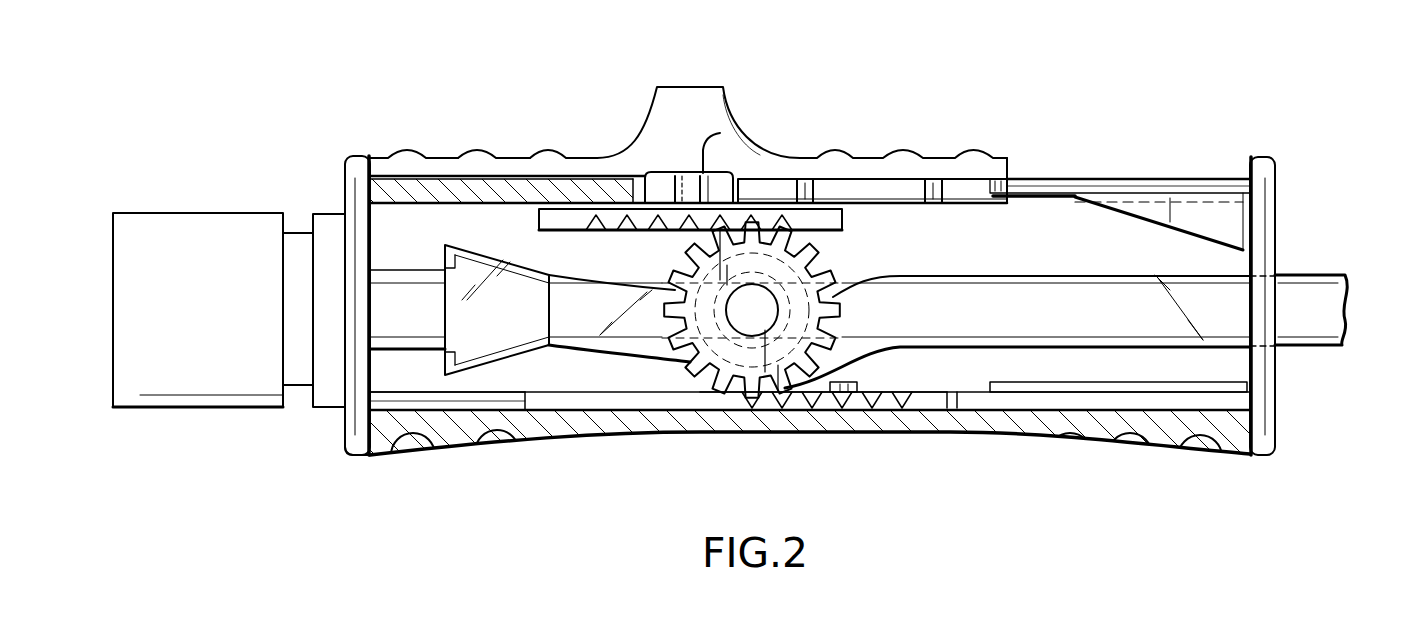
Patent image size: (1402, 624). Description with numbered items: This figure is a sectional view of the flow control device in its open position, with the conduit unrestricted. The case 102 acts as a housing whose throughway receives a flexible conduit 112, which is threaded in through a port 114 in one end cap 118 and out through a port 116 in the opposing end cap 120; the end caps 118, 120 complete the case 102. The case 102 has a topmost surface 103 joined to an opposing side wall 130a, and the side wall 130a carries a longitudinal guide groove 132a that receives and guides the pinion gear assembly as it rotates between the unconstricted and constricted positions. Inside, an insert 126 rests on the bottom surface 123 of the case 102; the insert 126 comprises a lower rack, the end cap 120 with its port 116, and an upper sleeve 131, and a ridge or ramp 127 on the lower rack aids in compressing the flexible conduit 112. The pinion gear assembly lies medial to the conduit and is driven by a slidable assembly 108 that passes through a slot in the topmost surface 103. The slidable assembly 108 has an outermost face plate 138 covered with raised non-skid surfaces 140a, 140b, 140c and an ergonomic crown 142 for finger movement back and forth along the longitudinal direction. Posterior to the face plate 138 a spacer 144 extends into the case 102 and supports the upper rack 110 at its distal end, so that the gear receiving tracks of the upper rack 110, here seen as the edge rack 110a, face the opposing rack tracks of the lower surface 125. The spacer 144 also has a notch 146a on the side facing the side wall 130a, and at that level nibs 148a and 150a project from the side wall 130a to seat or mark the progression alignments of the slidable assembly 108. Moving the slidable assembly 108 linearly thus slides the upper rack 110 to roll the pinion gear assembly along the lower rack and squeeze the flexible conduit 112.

The case 102 is at (837, 422).
The topmost surface 103 is at (1078, 178).
The slidable assembly 108 is at (673, 97).
The upper rack 110 is at (734, 240).
The upper rack 110a is at (596, 232).
The flexible conduit 112 is at (1310, 275).
The port 114 is at (95, 300).
The port 116 is at (1366, 316).
The end cap 118 is at (353, 455).
The end cap 120 is at (1275, 450).
The bottom surface 123 is at (463, 403).
The lower surface 125 is at (597, 380).
The insert 126 is at (1170, 183).
The ridge or ramp 127 is at (847, 382).
The side wall 130a is at (383, 385).
The upper sleeve 131 is at (1083, 190).
The guide groove 132a is at (982, 335).
The face plate 138 is at (384, 158).
The raised surface 140a is at (412, 150).
The raised surface 140b is at (480, 150).
The raised surface 140c is at (548, 150).
The crown 142 is at (705, 85).
The spacer 144 is at (733, 113).
The notch 146a is at (673, 180).
The nib 148a is at (933, 180).
The nib 150a is at (817, 180).